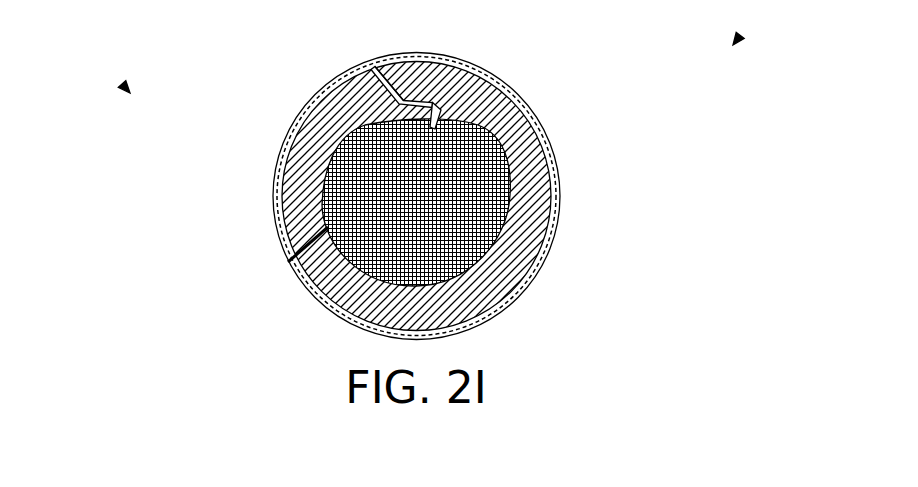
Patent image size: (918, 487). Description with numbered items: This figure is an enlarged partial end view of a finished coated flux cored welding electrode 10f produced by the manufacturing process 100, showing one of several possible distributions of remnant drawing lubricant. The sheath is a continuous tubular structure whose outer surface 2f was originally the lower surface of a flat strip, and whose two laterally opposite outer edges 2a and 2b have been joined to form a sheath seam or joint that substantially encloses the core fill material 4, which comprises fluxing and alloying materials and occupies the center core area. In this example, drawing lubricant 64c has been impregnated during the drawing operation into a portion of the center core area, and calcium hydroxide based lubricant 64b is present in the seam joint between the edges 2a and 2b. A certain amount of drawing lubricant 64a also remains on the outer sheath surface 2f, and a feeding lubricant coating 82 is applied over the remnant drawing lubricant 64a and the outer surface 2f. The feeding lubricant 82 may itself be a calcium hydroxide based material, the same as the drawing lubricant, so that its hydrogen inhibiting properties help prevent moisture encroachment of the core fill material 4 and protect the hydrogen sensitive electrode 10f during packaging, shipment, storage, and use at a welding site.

The process 100 is at (740, 36).
The coated flux cored welding electrode 10f is at (123, 85).
The outer edge 2a is at (340, 82).
The outer edge 2b is at (510, 106).
The outer surface 2f is at (450, 196).
The core fill material 4 is at (277, 266).
The drawing lubricant 64a is at (369, 195).
The calcium hydroxide based lubricant 64b is at (432, 54).
The drawing lubricant 64c is at (450, 169).
The feeding lubricant 82 is at (375, 196).